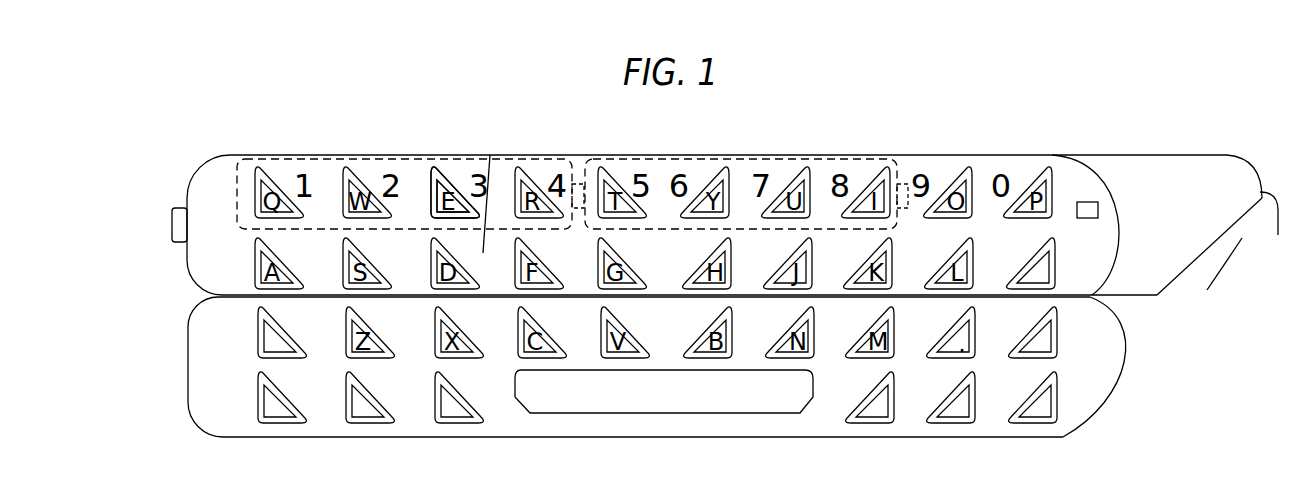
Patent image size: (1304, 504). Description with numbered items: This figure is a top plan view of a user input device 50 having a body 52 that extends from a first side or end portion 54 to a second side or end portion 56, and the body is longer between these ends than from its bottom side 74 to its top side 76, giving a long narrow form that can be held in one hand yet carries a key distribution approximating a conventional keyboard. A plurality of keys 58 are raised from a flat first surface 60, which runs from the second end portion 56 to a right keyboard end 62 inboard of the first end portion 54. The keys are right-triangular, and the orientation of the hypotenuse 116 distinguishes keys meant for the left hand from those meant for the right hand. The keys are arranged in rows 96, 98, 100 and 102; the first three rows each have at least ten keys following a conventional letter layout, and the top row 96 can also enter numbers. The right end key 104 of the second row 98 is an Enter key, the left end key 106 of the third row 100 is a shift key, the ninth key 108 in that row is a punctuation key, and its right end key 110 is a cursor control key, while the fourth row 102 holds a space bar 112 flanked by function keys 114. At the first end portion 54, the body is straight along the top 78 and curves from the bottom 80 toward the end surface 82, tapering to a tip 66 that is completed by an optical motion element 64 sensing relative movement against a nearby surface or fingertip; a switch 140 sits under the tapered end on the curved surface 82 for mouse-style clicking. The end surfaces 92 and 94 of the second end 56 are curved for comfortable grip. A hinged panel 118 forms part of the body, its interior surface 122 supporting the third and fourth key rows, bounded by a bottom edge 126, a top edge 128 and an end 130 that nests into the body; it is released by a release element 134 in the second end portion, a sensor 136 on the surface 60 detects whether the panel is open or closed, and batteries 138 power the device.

The user input device 50 is at (857, 108).
The body 52 is at (1083, 128).
The first side or end portion 54 is at (1213, 177).
The second side or end portion 56 is at (212, 181).
The keys 58 is at (372, 170).
The first surface 60 is at (490, 155).
The right keyboard end 62 is at (1078, 247).
The optical motion element 64 is at (1250, 168).
The tip 66 is at (1278, 231).
The bottom side 74 is at (650, 438).
The top side 76 is at (560, 155).
The top of the first end 78 is at (1113, 155).
The bottom of the first end 80 is at (1135, 297).
The end surface of the first end 82 is at (1253, 236).
The end surface of the second end 92 is at (186, 194).
The end surface of the second end 94 is at (188, 370).
The first row of keys 96 is at (1060, 195).
The second row of keys 98 is at (1064, 272).
The third row of keys 100 is at (1062, 330).
The fourth row of keys 102 is at (1065, 395).
The right end key 104 is at (1030, 244).
The shift key 106 is at (255, 335).
The punctuation key 108 is at (953, 320).
The cursor control key 110 is at (1032, 322).
The space bar 112 is at (750, 402).
The function keys 114 is at (363, 410).
The hypotenuse 116 is at (292, 250).
The hinged panel 118 is at (1077, 440).
The interior surface 122 is at (497, 392).
The bottom edge 126 is at (400, 440).
The top edge 128 is at (423, 297).
The end 130 is at (1120, 368).
The release element 134 is at (172, 212).
The sensor 136 is at (1098, 210).
The batteries 138 is at (312, 152).
The switch 140 is at (1212, 292).